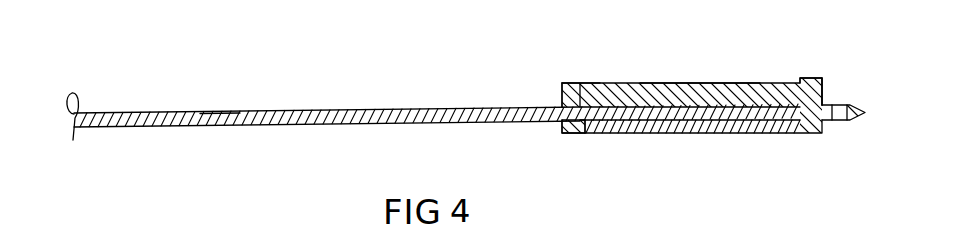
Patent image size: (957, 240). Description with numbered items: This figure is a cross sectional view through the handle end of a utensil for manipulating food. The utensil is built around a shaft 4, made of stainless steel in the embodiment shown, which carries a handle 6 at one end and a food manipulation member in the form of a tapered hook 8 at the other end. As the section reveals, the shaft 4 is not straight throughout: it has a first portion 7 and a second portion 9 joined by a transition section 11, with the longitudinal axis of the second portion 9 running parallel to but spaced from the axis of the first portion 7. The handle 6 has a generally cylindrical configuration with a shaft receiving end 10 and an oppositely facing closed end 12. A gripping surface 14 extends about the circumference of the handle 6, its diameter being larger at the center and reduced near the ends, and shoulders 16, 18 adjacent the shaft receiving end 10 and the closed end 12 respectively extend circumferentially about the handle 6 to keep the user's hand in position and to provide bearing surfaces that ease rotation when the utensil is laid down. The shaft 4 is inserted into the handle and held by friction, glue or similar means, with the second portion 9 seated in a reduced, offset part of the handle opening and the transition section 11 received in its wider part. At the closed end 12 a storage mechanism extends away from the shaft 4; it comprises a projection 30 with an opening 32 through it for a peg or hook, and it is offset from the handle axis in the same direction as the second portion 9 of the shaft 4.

The shaft 4 is at (261, 136).
The handle 6 is at (660, 63).
The first portion 7 is at (203, 113).
The tapered hook 8 is at (62, 127).
The second portion 9 is at (688, 133).
The shaft receiving end 10 is at (562, 90).
The transition section 11 is at (575, 133).
The closed end 12 is at (825, 83).
The gripping surface 14 is at (705, 82).
The shoulder 16 is at (572, 83).
The shoulder 18 is at (810, 78).
The projection 30 is at (868, 113).
The opening 32 is at (845, 121).